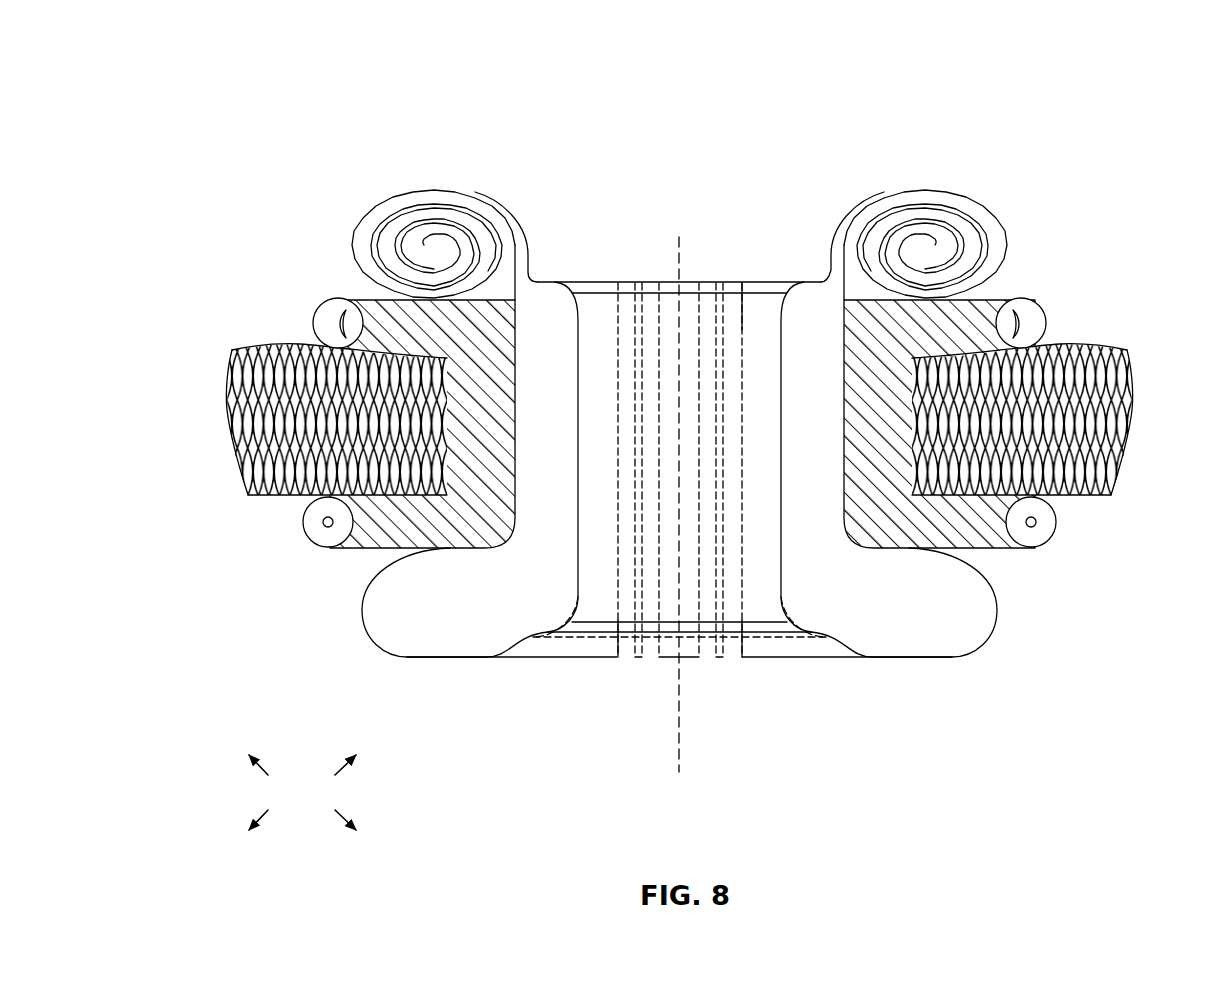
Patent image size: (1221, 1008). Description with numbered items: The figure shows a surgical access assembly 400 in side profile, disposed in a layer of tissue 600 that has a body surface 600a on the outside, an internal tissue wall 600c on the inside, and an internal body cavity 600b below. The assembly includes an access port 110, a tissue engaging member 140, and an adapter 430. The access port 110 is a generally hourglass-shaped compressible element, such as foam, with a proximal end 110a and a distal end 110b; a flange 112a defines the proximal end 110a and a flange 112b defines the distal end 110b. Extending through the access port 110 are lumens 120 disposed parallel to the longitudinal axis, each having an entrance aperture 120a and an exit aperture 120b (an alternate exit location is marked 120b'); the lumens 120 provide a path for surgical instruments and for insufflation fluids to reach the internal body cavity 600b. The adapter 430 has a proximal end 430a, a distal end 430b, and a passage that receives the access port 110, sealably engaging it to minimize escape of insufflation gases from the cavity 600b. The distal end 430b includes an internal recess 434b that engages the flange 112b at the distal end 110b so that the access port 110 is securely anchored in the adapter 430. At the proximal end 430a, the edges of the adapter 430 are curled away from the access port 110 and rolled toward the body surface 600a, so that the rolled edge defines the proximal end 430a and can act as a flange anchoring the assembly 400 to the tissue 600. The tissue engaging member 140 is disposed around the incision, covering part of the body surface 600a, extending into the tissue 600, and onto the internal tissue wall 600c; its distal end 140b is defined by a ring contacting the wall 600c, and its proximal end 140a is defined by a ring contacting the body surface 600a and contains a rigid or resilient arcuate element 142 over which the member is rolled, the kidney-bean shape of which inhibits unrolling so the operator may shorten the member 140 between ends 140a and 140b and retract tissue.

The surgical access assembly 400 is at (434, 60).
The adapter 430 is at (508, 341).
The proximal end of adapter 430a is at (353, 235).
The distal end of adapter 430b is at (800, 660).
The internal recess 434b is at (495, 645).
The layer of tissue 600 is at (232, 425).
The body surface 600a is at (263, 350).
The internal body cavity 600b is at (302, 792).
The internal tissue wall 600c is at (273, 498).
The access port 110 is at (722, 461).
The proximal end of access port 110a is at (762, 280).
The distal end of access port 110b is at (582, 633).
The flange 112a is at (845, 250).
The flange 112b is at (740, 632).
The lumen 120 is at (742, 445).
The entrance aperture 120a is at (737, 280).
The exit aperture 120b is at (720, 678).
The alternate lower pin end 120b' is at (609, 687).
The tissue engaging member 140 is at (920, 395).
The proximal end of tissue engaging member 140a is at (1046, 325).
The distal end of tissue engaging member 140b is at (1056, 527).
The arcuate element 142 is at (1030, 303).